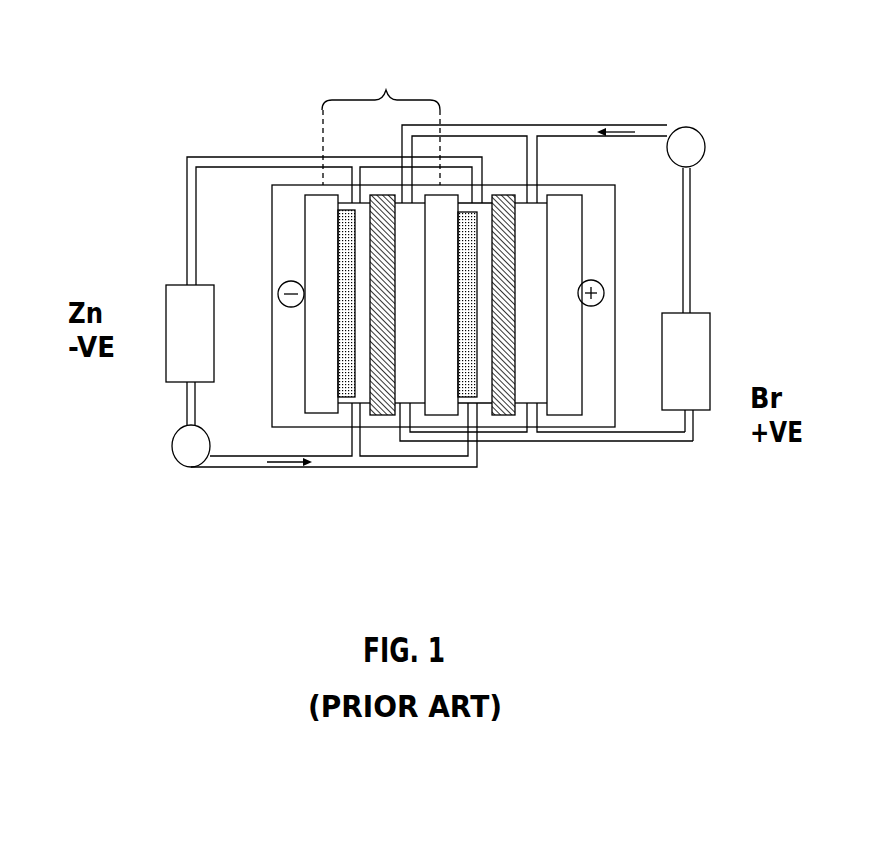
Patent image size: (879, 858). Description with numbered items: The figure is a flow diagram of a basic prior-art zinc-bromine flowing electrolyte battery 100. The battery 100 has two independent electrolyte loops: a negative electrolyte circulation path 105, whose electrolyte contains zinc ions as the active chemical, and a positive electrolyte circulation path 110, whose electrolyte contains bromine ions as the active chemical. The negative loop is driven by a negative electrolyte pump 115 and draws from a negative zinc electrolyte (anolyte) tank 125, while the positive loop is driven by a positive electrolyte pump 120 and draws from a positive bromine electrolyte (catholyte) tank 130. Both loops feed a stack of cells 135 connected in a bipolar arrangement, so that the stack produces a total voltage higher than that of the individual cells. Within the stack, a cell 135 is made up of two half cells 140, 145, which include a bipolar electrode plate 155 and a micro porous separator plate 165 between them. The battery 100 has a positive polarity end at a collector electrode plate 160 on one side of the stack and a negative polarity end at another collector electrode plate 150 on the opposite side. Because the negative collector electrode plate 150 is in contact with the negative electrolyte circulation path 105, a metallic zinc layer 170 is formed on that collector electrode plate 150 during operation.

The zinc-bromine flowing electrolyte battery 100 is at (90, 104).
The negative electrolyte circulation path 105 is at (270, 163).
The positive electrolyte circulation path 110 is at (568, 133).
The negative electrolyte pump 115 is at (185, 443).
The positive electrolyte pump 120 is at (688, 150).
The negative zinc electrolyte (anolyte) tank 125 is at (190, 325).
The positive bromine electrolyte (catholyte) tank 130 is at (690, 372).
The stack of cells 135 is at (386, 90).
The half cell 140 is at (342, 432).
The half cell 145 is at (420, 433).
The collector electrode plate 150 is at (318, 267).
The bipolar electrode plate 155 is at (447, 393).
The collector electrode plate 160 is at (570, 228).
The micro porous separator plate 165 is at (380, 388).
The metallic zinc layer 170 is at (342, 373).